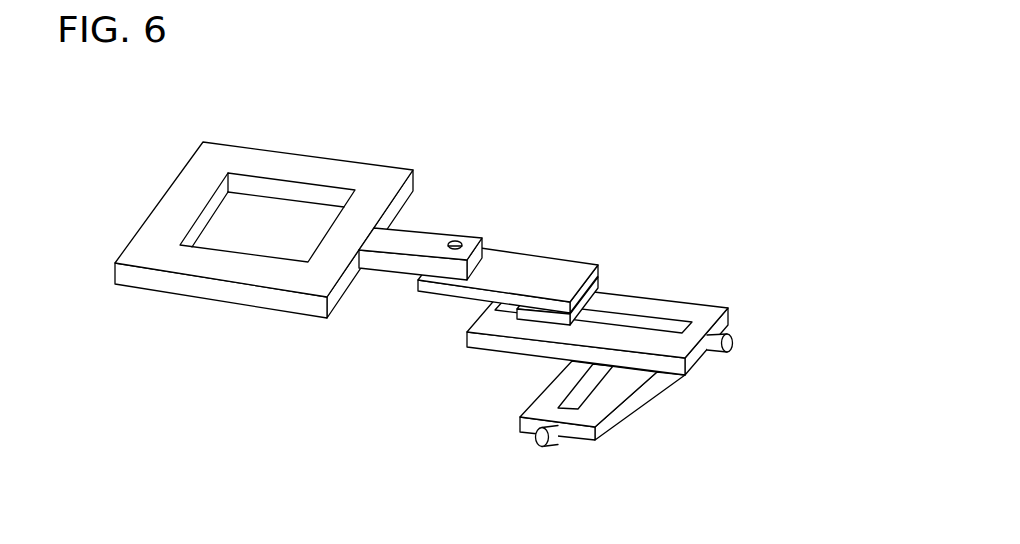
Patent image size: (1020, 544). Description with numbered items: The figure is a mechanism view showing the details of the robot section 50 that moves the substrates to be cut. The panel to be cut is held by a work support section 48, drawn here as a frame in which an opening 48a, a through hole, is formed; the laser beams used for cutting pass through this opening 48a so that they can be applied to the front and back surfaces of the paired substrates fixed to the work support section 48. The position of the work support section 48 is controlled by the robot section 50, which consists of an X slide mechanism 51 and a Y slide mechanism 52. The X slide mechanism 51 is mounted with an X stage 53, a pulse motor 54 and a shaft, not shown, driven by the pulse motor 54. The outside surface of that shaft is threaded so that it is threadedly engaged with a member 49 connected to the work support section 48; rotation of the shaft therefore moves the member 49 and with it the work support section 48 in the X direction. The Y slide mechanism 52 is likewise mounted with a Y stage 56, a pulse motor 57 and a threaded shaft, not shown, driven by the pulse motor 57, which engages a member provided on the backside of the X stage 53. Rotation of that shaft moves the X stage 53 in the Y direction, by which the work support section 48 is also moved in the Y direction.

The work support section 48 is at (401, 206).
The opening (through hole) 48a is at (232, 215).
The member 49 is at (543, 258).
The robot section 50 is at (493, 295).
The X slide mechanism 51 is at (677, 287).
The Y slide mechanism 52 is at (684, 428).
The X stage 53 is at (664, 305).
The pulse motor 54 is at (769, 303).
The Y stage 56 is at (627, 400).
The pulse motor 57 is at (547, 446).